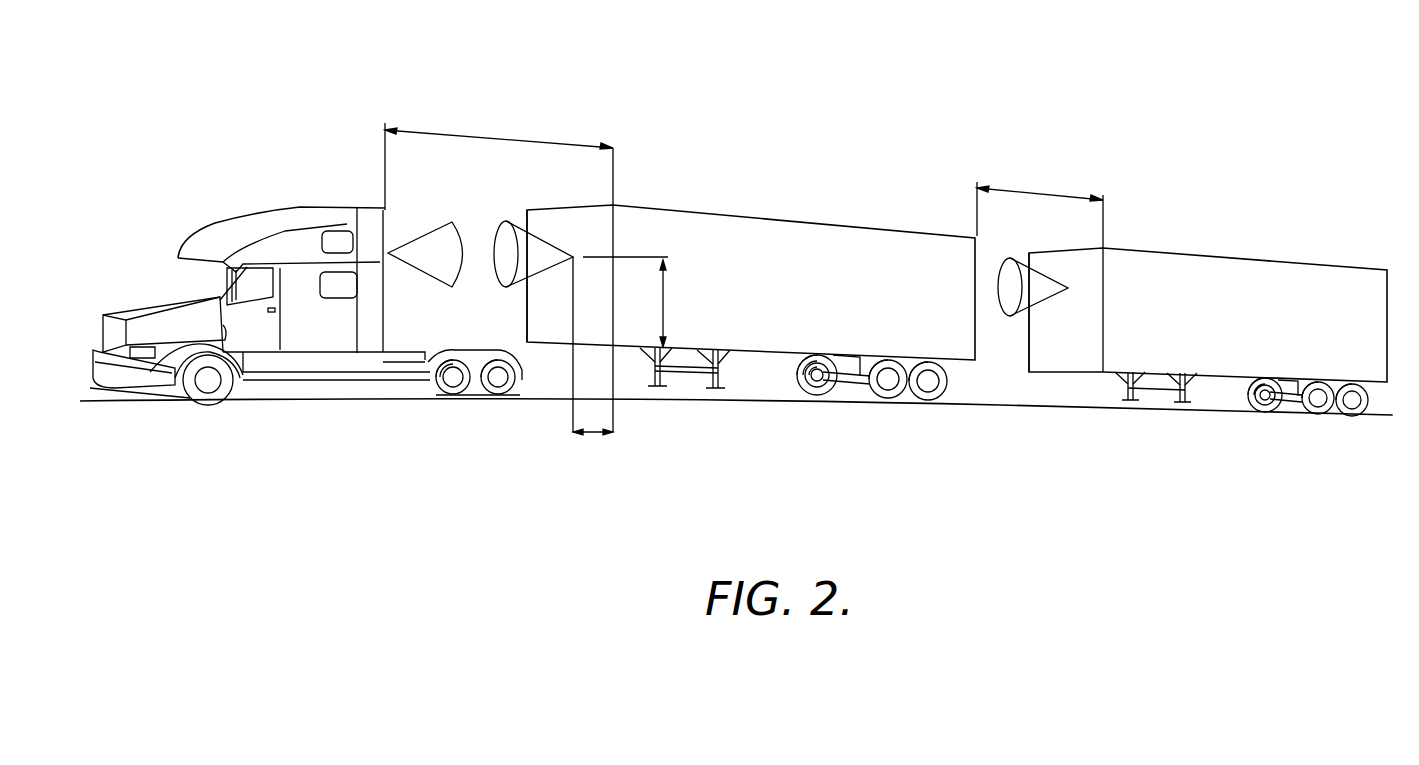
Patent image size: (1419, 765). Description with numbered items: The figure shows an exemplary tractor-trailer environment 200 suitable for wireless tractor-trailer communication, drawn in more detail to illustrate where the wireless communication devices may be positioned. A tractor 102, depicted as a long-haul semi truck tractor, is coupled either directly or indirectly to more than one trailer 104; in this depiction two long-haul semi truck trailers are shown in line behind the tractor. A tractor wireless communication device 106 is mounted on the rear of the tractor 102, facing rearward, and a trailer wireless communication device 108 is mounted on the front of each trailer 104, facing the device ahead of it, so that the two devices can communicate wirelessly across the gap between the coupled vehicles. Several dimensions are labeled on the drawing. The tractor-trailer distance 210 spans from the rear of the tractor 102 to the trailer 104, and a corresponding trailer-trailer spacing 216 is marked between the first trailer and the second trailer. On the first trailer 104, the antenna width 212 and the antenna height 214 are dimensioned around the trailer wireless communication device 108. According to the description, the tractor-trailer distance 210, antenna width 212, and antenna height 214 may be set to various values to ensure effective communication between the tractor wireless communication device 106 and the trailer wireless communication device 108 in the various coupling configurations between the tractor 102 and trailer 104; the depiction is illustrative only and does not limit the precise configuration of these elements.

The tractor-trailer environment 200 is at (325, 78).
The tractor 102 is at (300, 205).
The trailer 104 is at (794, 222).
The tractor wireless communication device 106 is at (432, 222).
The trailer wireless communication device 108 is at (549, 222).
The tractor-trailer distance 210 is at (504, 94).
The antenna width 212 is at (586, 506).
The antenna height 214 is at (750, 333).
The trailer-trailer distance 216 is at (1040, 144).